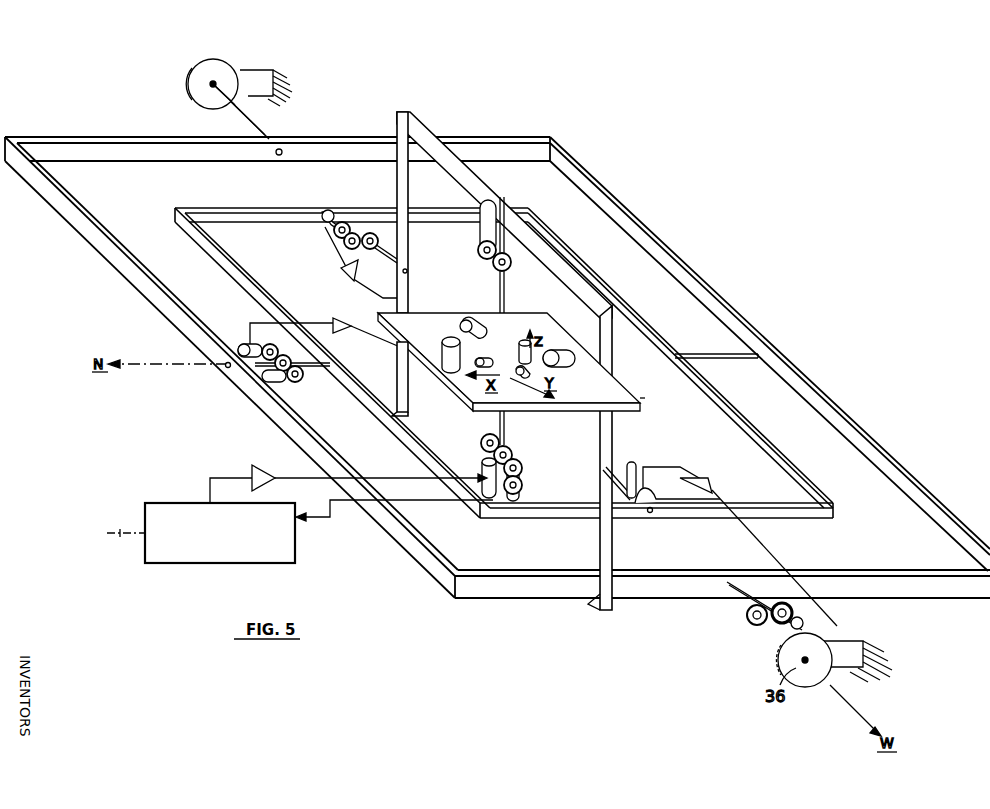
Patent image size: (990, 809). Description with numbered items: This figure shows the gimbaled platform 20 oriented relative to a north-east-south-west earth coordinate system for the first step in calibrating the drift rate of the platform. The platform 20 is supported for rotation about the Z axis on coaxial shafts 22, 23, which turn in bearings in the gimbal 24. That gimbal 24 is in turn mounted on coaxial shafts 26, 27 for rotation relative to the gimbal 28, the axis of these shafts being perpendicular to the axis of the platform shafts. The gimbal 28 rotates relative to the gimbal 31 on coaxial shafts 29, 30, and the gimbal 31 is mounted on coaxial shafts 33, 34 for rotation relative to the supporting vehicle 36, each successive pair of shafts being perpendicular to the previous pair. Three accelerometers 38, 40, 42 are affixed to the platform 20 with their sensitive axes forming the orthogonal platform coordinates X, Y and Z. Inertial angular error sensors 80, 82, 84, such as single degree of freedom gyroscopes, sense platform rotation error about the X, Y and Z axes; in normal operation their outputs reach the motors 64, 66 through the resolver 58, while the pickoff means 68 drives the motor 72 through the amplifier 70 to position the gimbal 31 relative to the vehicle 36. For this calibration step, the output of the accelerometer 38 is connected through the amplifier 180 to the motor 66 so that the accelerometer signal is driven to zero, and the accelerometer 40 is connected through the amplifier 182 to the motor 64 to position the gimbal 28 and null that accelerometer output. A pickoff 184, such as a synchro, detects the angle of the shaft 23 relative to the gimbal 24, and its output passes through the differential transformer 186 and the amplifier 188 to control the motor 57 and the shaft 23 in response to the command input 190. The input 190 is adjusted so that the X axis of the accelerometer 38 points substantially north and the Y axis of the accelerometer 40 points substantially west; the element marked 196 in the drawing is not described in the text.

The platform 20 is at (645, 398).
The shaft 22 is at (505, 286).
The shaft 23 is at (506, 437).
The gimbal 24 is at (605, 345).
The shaft 26 is at (603, 492).
The shaft 27 is at (392, 259).
The gimbal 28 is at (728, 401).
The shaft 29 is at (722, 354).
The shaft 30 is at (320, 368).
The gimbal 31 is at (794, 396).
The shaft 33 is at (736, 593).
The shaft 34 is at (235, 97).
The supporting vehicle 36 is at (238, 68).
The accelerometer 38 is at (474, 373).
The accelerometer 40 is at (525, 380).
The accelerometer 42 is at (523, 341).
The motor 57 is at (488, 472).
The resolver 58 is at (478, 246).
The motor 64 is at (250, 347).
The motor 66 is at (332, 224).
The pickoff means 68 is at (638, 470).
The amplifier 70 is at (700, 480).
The motor 72 is at (808, 614).
The inertial angular error sensor 80 is at (560, 366).
The inertial angular error sensor 82 is at (468, 320).
The inertial angular error sensor 84 is at (444, 350).
The amplifier 180 is at (342, 270).
The amplifier 182 is at (338, 322).
The pickoff 184 is at (523, 485).
The differential transformer 186 is at (298, 556).
The amplifier 188 is at (257, 467).
The command input 190 is at (117, 541).
The pulley 196 is at (286, 381).